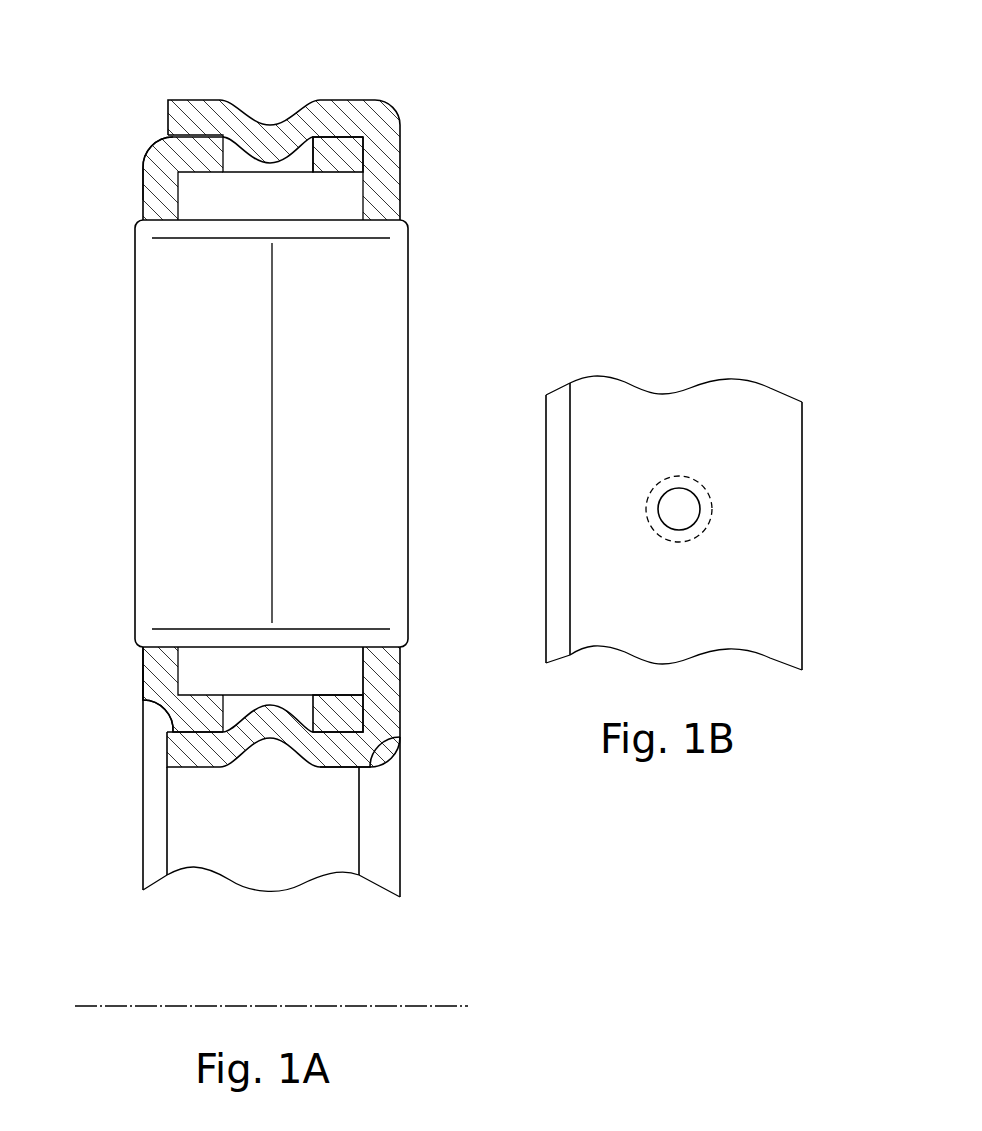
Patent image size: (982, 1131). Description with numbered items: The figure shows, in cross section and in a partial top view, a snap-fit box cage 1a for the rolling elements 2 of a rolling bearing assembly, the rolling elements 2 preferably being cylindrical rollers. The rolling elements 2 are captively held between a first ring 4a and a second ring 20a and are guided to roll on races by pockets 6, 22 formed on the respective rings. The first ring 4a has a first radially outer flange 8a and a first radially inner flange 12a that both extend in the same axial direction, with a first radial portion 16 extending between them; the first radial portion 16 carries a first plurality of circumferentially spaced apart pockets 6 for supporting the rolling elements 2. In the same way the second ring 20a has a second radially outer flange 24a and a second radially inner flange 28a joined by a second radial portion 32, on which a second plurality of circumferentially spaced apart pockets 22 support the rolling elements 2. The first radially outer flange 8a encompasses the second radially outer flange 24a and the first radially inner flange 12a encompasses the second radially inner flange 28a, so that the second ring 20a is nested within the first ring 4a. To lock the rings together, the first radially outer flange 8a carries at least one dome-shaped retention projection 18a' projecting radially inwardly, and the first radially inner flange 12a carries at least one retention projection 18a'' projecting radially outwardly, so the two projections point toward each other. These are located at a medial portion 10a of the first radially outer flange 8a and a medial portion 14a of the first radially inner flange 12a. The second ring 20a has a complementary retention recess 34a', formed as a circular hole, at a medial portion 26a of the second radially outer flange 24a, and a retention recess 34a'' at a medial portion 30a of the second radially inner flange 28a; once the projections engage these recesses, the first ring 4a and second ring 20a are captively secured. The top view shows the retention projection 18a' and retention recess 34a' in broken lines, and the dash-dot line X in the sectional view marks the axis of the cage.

In FIG. 1A, the snap-fit box cage 1a is at (108, 98).
In FIG. 1A, the rolling elements 2 is at (176, 400).
In FIG. 1A, the first ring 4a is at (422, 101).
In FIG. 1A, the pockets 6 is at (380, 223).
In FIG. 1A, the first radially outer flange 8a is at (373, 100).
In FIG. 1A, the medial portion 10a is at (193, 107).
In FIG. 1A, the first radially inner flange 12a is at (347, 755).
In FIG. 1A, the medial portion 14a is at (210, 768).
In FIG. 1A, the first radial portion 16 is at (380, 675).
In FIG. 1A, the retention projection 18a' is at (270, 73).
In FIG. 1B, the retention projection 18a' is at (679, 441).
In FIG. 1A, the retention projection 18a'' is at (270, 782).
In FIG. 1A, the second ring 20a is at (148, 182).
In FIG. 1A, the pockets 22 is at (152, 647).
In FIG. 1A, the second radially outer flange 24a is at (337, 153).
In FIG. 1A, the medial portion 26a is at (203, 168).
In FIG. 1A, the second radially inner flange 28a is at (337, 713).
In FIG. 1A, the medial portion 30a is at (167, 717).
In FIG. 1A, the second radial portion 32 is at (163, 667).
In FIG. 1A, the retention recess 34a' is at (280, 92).
In FIG. 1B, the retention recess 34a' is at (768, 486).
In FIG. 1A, the retention recess 34a'' is at (268, 693).
In FIG. 1A, the axis X is at (423, 1005).